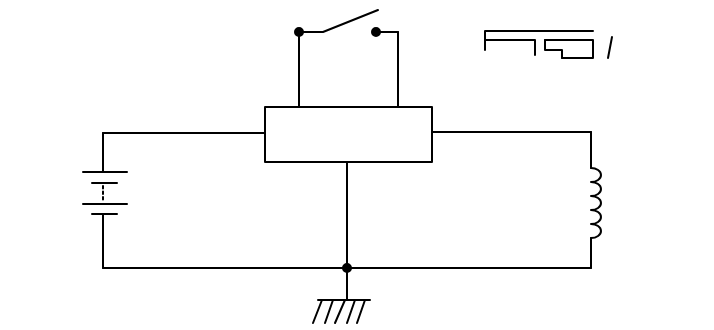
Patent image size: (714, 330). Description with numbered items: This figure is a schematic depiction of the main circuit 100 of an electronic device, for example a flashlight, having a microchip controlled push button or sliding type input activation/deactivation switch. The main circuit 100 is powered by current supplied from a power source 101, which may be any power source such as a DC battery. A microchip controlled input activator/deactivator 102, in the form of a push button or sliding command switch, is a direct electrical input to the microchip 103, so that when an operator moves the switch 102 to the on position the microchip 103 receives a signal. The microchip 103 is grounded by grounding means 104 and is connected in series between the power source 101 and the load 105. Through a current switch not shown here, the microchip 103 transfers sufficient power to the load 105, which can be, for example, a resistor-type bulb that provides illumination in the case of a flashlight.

The main circuit 100 is at (160, 111).
The power source 101 is at (95, 192).
The input activator/deactivator 102 is at (399, 43).
The microchip 103 is at (412, 162).
The grounding means 104 is at (348, 220).
The load 105 is at (603, 205).